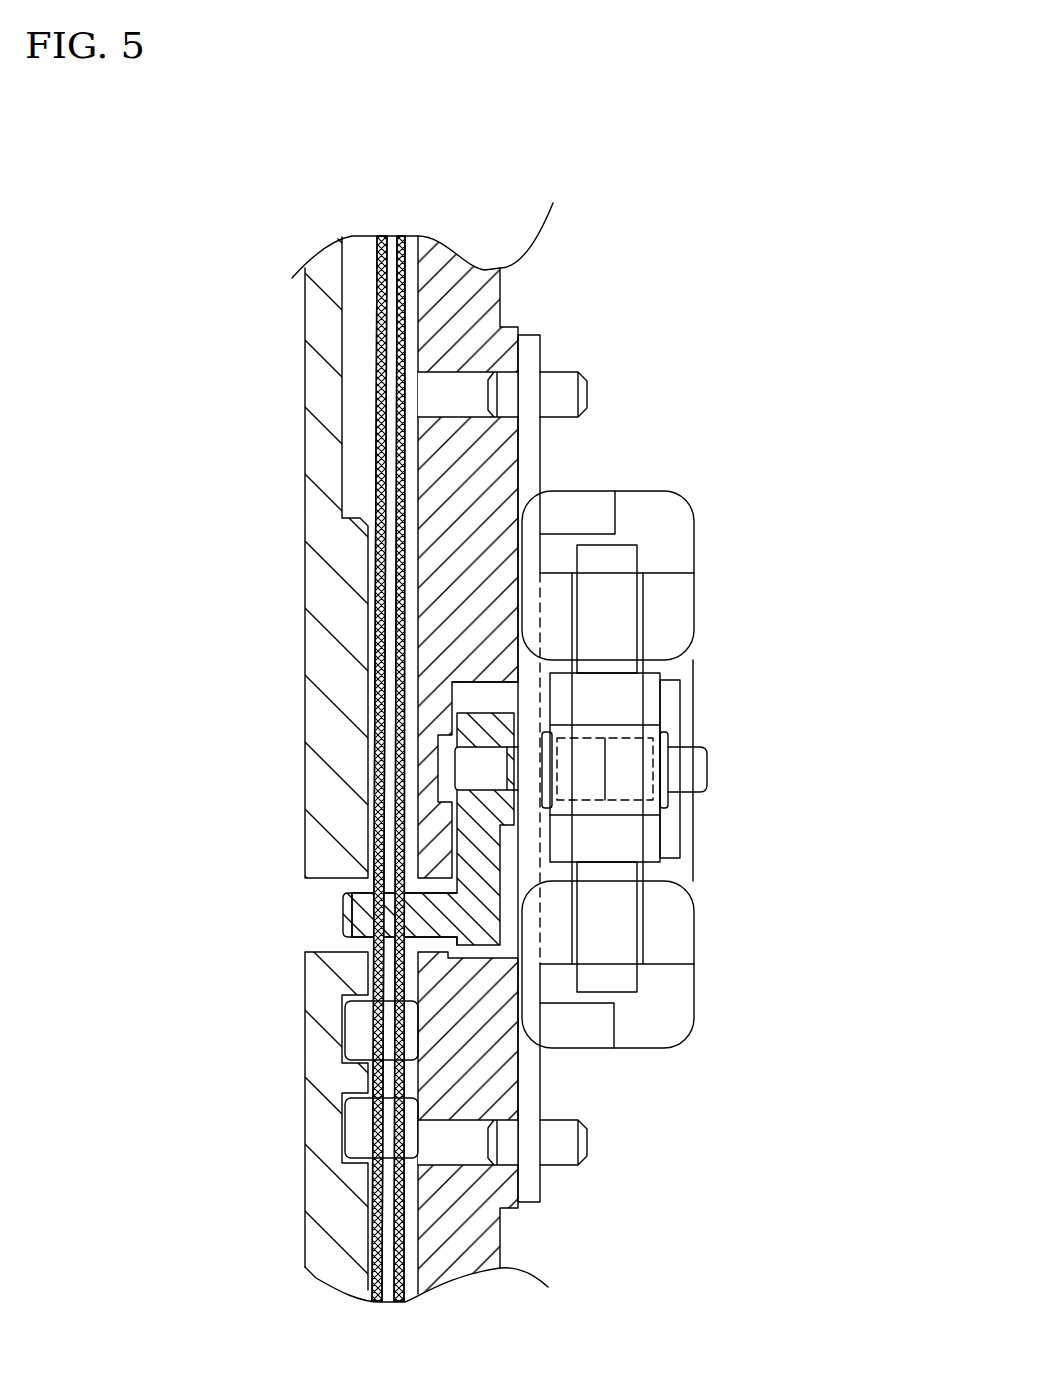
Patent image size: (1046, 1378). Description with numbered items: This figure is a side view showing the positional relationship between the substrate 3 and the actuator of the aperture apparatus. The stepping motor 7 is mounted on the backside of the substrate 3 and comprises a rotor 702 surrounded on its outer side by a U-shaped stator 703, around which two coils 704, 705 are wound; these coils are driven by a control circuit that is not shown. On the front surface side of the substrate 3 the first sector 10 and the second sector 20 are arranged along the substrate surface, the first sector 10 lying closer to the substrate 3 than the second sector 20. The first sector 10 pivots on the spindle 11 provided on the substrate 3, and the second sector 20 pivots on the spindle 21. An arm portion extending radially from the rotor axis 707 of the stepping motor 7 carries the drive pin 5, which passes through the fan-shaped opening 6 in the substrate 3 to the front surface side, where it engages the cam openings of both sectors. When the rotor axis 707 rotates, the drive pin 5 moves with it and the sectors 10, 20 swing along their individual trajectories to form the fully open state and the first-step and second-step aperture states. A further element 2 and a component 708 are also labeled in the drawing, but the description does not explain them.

The first plate 2 is at (323, 585).
The substrate 3 is at (478, 298).
The drive pin 5 is at (343, 913).
The fan-shaped opening 6 is at (436, 942).
The stepping motor 7 is at (697, 667).
The first sector 10 is at (397, 362).
The spindle 11 is at (355, 1135).
The second sector 20 is at (373, 493).
The spindle 21 is at (357, 1032).
The rotor 702 is at (647, 843).
The U-shaped stator 703 is at (613, 585).
The coil 704 is at (692, 982).
The coil 705 is at (660, 507).
The rotor axis 707 is at (478, 762).
The support block 708 is at (475, 845).